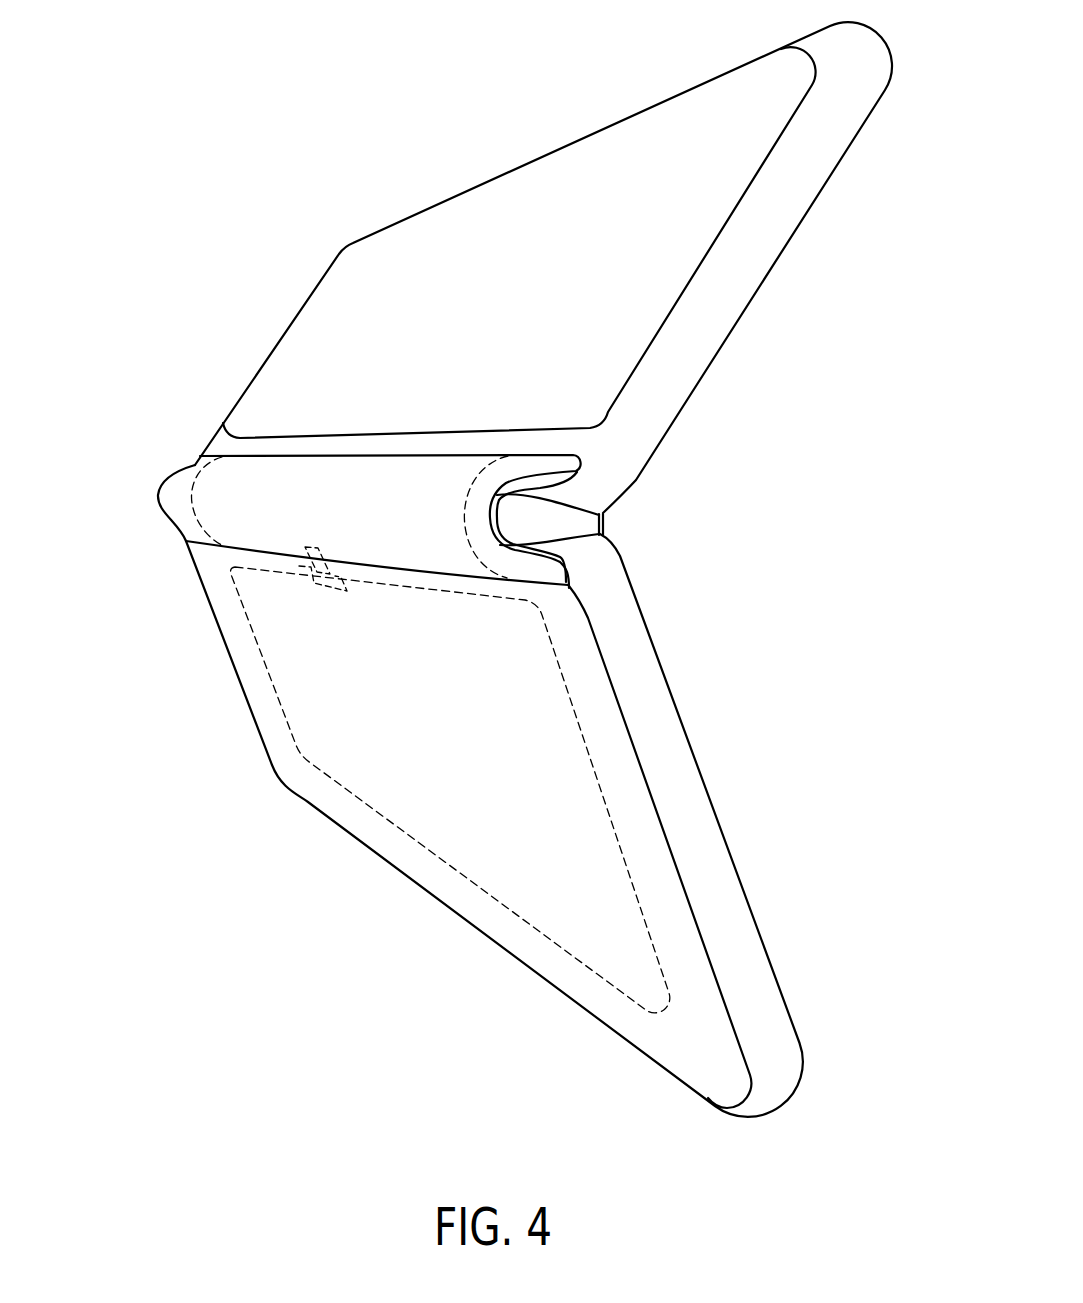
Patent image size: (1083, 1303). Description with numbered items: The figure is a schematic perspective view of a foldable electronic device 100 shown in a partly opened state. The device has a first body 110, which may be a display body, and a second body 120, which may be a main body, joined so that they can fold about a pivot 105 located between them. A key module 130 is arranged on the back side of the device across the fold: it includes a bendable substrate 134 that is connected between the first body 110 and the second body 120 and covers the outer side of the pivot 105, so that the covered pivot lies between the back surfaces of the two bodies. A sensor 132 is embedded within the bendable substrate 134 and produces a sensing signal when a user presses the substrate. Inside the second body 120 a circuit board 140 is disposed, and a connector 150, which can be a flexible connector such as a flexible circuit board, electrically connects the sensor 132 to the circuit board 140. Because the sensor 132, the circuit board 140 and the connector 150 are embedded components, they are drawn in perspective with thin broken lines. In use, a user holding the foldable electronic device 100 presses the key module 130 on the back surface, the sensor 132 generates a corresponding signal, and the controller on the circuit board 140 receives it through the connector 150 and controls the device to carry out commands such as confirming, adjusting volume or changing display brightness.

The foldable electronic device 100 is at (470, 597).
The pivot 105 is at (570, 521).
The first body 110 is at (780, 228).
The second body 120 is at (718, 875).
The key module 130 is at (412, 506).
The sensor 132 is at (205, 470).
The bendable substrate 134 is at (543, 573).
The circuit board 140 is at (460, 837).
The connector 150 is at (310, 560).